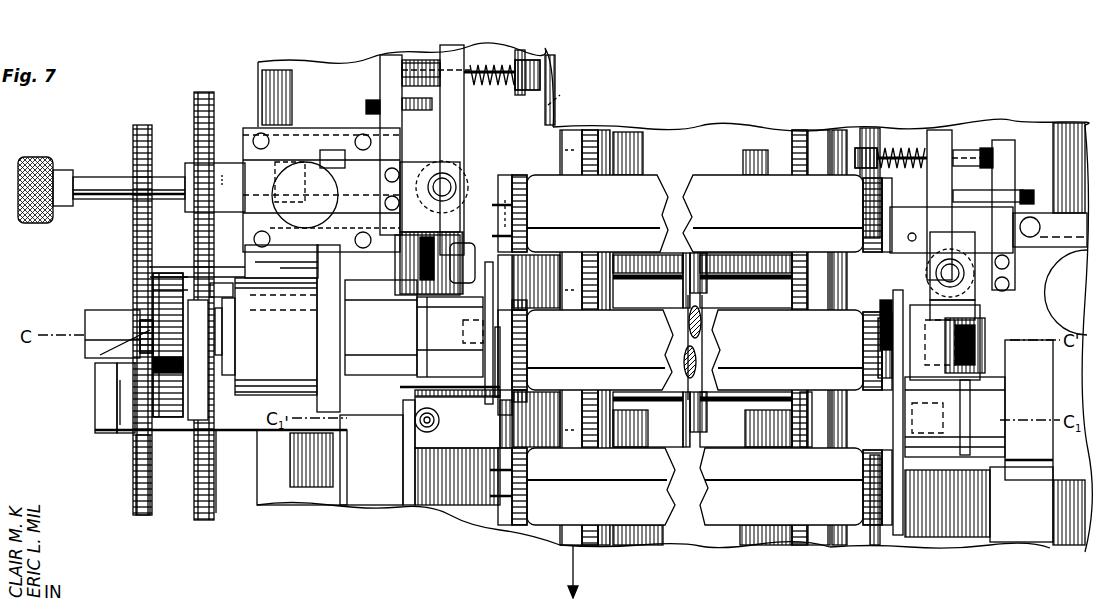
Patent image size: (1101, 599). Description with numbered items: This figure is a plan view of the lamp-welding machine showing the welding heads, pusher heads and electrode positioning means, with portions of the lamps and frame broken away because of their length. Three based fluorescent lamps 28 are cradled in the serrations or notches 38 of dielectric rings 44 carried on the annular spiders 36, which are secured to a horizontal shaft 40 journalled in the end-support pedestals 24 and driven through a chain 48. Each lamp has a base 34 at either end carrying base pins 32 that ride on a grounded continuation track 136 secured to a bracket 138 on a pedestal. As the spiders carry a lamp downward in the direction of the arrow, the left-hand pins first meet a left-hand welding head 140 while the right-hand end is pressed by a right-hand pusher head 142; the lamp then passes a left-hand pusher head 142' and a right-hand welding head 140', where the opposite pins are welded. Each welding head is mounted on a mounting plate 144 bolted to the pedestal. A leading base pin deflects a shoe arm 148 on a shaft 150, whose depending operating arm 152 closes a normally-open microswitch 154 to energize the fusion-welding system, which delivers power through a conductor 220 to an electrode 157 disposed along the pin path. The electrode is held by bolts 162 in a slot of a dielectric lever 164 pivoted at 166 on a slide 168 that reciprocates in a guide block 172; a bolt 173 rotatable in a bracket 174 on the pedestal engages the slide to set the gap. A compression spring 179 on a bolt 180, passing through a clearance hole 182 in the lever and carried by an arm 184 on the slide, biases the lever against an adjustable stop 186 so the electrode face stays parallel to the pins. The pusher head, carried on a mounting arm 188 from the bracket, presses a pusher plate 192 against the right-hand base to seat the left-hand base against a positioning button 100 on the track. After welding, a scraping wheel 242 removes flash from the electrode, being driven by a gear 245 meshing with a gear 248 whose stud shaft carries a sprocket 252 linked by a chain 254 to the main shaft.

The end-support pedestal 24 is at (357, 507).
The based fluorescent lamp 28 is at (695, 178).
The base pin 32 is at (522, 229).
The base 34 is at (522, 203).
The annular spider 36 is at (605, 150).
The serrations or notches 38 is at (815, 535).
The horizontal shaft 40 is at (391, 358).
The ring 44 is at (572, 133).
The chain 48 is at (216, 498).
The positioning button 100 is at (522, 334).
The continuation track 136 is at (522, 52).
The bracket 138 is at (398, 412).
The left-hand welding head 140 is at (377, 85).
The right-hand welding head 140' is at (961, 319).
The right-hand pusher head 142 is at (940, 338).
The left-hand pusher head 142' is at (393, 439).
The mounting plate 144 is at (327, 344).
The shoe arm 148 is at (495, 294).
The shaft 150 is at (548, 108).
The operating arm 152 is at (290, 128).
The microswitch 154 is at (252, 312).
The electrode 157 is at (440, 339).
The bolts 162 is at (462, 300).
The lever 164 is at (466, 62).
The pivot 166 is at (430, 190).
The slide 168 is at (208, 192).
The guide block 172 is at (275, 138).
The bolt 173 is at (95, 178).
The bracket 174 is at (185, 170).
The compression spring 179 is at (510, 66).
The bolt 180 is at (540, 76).
The clearance hole 182 is at (450, 62).
The arm 184 is at (390, 58).
The adjustable stop 186 is at (368, 100).
The mounting arm 188 is at (470, 405).
The pusher plate 192 is at (880, 349).
The conductor 220 is at (418, 255).
The scraping wheel 242 is at (492, 272).
The gear 245 is at (100, 355).
The gear 248 is at (163, 436).
The sprocket 252 is at (115, 433).
The chain 254 is at (133, 500).